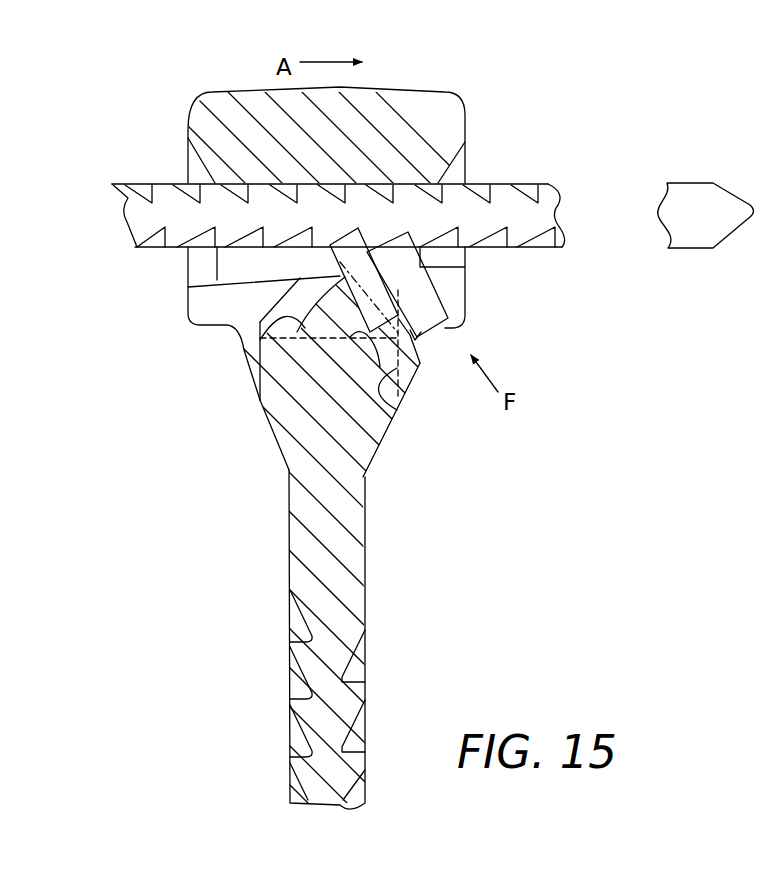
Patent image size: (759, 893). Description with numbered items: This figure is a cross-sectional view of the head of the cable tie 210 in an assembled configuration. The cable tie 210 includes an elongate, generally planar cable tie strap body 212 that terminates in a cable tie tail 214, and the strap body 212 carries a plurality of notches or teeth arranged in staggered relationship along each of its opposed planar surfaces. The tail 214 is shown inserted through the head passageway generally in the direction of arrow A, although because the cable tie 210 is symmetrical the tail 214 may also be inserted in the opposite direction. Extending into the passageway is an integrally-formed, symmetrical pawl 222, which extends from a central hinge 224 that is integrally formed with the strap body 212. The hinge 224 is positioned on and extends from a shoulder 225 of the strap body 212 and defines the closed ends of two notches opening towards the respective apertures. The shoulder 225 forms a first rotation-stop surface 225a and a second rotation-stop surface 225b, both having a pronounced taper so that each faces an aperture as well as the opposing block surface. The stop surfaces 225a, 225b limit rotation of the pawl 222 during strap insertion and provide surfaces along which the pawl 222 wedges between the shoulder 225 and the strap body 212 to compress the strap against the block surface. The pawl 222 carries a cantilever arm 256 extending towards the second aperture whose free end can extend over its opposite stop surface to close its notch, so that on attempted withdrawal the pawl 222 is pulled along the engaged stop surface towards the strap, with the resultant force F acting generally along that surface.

The cable tie 210 is at (258, 63).
The cable tie strap body 212 is at (560, 207).
The cable tie tail 214 is at (702, 240).
The pawl 222 is at (440, 328).
The hinge 224 is at (260, 339).
The shoulder 225 is at (323, 400).
The first rotation-stop surface 225a is at (260, 395).
The second rotation-stop surface 225b is at (393, 417).
The cantilever arm 256 is at (400, 370).